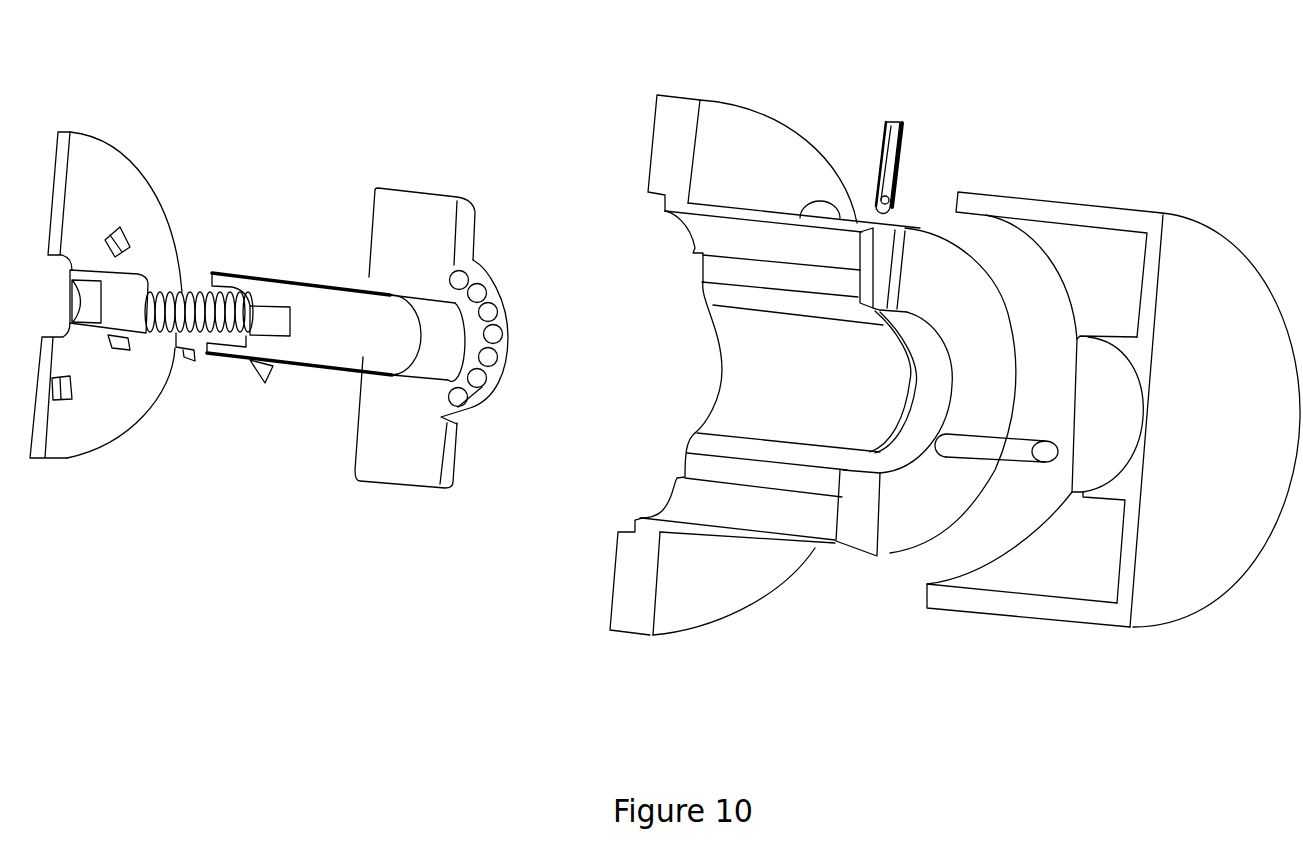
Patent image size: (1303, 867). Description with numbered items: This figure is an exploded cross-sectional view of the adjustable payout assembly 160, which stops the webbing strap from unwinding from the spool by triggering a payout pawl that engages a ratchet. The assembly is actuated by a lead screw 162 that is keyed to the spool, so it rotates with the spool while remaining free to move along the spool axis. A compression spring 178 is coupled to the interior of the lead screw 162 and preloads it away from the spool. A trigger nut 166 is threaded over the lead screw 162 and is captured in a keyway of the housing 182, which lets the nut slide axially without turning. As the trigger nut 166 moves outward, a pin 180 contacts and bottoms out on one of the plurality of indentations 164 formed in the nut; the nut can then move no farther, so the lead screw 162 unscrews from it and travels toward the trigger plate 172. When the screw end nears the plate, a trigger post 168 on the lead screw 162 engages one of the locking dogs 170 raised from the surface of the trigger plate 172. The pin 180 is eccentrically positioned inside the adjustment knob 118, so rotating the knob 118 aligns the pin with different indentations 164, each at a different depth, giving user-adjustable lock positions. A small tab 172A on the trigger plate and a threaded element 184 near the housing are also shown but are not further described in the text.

The adjustment knob 118 is at (1065, 220).
The adjustable payout assembly 160 is at (336, 634).
The lead screw 162 is at (315, 372).
The indentations 164 is at (487, 270).
The trigger nut 166 is at (390, 216).
The trigger post 168 is at (257, 375).
The locking dogs 170 is at (60, 397).
The trigger plate 172 is at (108, 408).
The tab 172A is at (183, 352).
The compression spring 178 is at (203, 296).
The pin 180 is at (970, 455).
The housing 182 is at (633, 578).
The set screw 184 is at (880, 148).